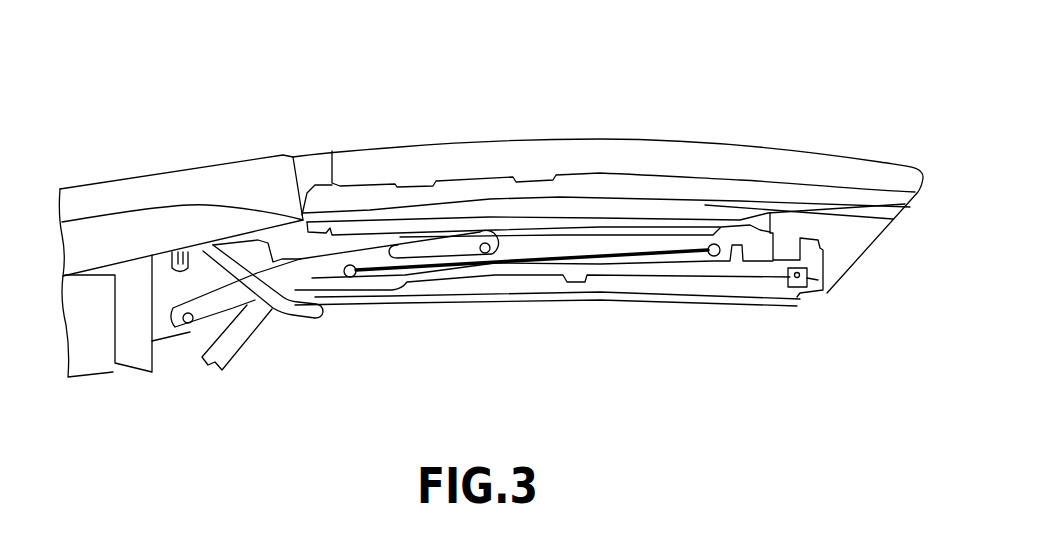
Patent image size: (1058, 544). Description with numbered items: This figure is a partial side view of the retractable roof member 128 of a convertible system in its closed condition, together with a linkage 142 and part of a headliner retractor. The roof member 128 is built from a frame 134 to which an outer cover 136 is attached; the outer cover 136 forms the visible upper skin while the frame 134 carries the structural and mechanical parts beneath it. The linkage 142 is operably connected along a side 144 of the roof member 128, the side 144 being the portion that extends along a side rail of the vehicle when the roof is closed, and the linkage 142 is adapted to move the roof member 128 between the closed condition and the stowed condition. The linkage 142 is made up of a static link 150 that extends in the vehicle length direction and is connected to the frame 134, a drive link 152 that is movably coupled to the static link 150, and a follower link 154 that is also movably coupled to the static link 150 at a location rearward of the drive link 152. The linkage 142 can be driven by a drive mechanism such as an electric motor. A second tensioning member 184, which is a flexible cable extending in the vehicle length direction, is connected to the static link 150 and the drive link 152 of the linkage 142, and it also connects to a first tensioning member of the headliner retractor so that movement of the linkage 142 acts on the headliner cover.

The retractable roof member 128 is at (775, 98).
The outer cover 136 is at (483, 142).
The frame 134 is at (572, 208).
The side 144 is at (840, 240).
The static link 150 is at (682, 258).
The second tensioning member 184 is at (553, 262).
The drive link 152 is at (350, 317).
The linkage 142 is at (295, 338).
The follower link 154 is at (165, 343).